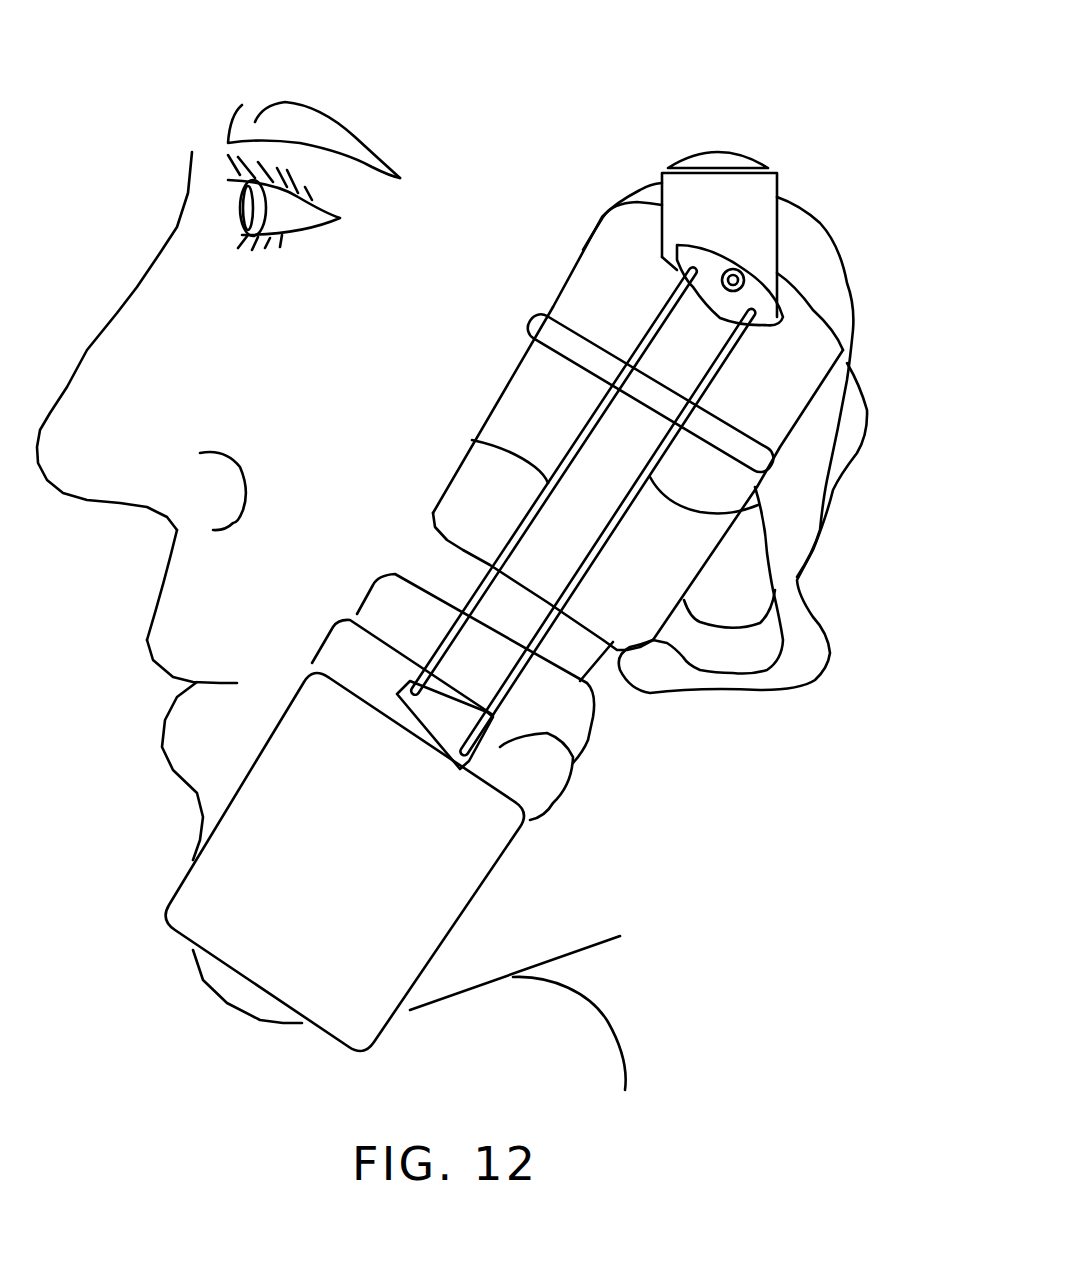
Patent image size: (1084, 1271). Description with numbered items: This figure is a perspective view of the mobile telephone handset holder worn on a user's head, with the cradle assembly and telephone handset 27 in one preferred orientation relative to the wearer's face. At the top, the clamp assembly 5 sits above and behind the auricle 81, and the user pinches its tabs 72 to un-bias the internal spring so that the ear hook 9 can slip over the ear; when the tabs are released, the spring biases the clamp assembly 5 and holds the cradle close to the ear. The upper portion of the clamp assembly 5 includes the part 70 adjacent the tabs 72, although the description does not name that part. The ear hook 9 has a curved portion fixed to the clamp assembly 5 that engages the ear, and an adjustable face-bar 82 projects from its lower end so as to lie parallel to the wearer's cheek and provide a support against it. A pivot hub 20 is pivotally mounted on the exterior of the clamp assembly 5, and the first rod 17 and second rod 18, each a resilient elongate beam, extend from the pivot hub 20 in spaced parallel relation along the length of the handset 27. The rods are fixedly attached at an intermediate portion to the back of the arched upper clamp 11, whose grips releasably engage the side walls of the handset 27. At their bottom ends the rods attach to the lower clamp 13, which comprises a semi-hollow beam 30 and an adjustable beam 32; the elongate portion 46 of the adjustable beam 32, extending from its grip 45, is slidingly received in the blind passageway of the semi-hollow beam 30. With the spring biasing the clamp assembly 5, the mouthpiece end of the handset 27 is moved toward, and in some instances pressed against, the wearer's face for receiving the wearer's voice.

The clamp assembly 5 is at (655, 162).
The tab 72 is at (720, 152).
The cap 70 is at (733, 183).
The pivot hub 20 is at (753, 290).
The auricle 81 is at (835, 296).
The ear hook 9 is at (827, 620).
The adjustable face-bar 82 is at (727, 687).
The first rod 17 is at (472, 440).
The telephone handset 27 is at (470, 505).
The second rod 18 is at (730, 520).
The upper clamp 11 is at (560, 369).
The semi-hollow beam 30 is at (337, 640).
The elongate portion 46 is at (570, 743).
The grip 45 is at (567, 790).
The adjustable beam 32 is at (495, 783).
The lower clamp 13 is at (333, 703).